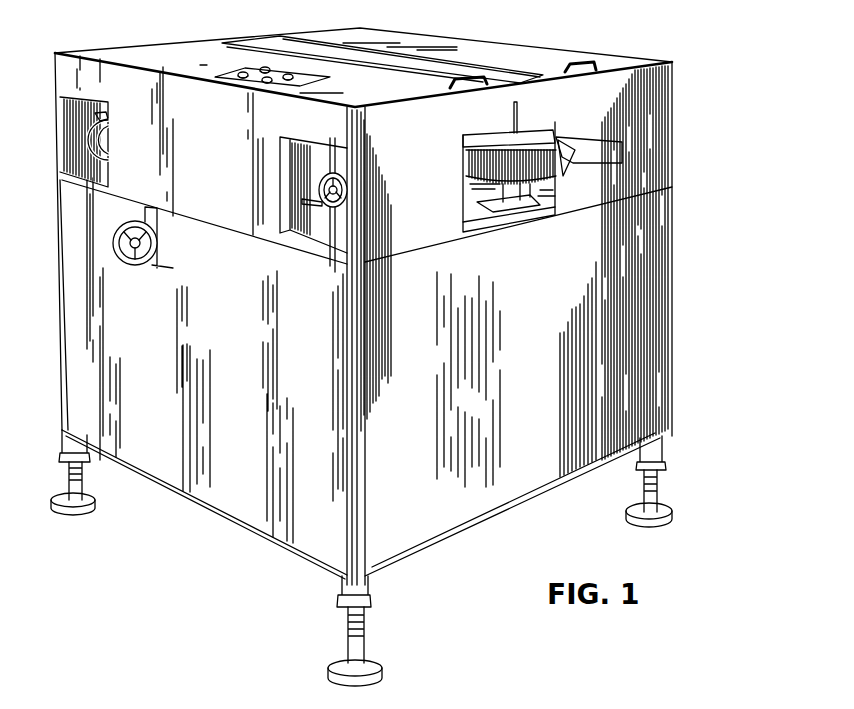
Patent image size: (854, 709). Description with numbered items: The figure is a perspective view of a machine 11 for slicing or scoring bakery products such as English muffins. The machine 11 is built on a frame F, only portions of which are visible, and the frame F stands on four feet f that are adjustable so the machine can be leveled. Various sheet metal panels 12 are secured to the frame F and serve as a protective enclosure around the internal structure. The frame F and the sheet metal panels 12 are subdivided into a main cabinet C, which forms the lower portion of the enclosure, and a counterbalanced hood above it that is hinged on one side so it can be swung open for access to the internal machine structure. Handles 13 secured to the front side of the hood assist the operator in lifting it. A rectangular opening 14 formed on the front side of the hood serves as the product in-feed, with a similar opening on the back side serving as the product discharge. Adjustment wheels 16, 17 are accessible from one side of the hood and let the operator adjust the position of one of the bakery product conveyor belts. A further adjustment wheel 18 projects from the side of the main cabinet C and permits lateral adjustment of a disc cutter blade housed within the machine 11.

The machine for slicing bakery products 11 is at (720, 91).
The sheet metal panels 12 is at (106, 78).
The handles 13 is at (565, 68).
The rectangular opening 14 is at (469, 190).
The adjustment wheel 16 is at (93, 132).
The adjustment wheel 17 is at (327, 218).
The adjustment wheel 18 is at (156, 245).
The frame F is at (362, 435).
The main cabinet C is at (222, 509).
The feet f is at (80, 512).